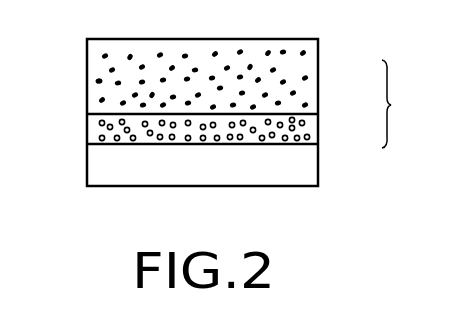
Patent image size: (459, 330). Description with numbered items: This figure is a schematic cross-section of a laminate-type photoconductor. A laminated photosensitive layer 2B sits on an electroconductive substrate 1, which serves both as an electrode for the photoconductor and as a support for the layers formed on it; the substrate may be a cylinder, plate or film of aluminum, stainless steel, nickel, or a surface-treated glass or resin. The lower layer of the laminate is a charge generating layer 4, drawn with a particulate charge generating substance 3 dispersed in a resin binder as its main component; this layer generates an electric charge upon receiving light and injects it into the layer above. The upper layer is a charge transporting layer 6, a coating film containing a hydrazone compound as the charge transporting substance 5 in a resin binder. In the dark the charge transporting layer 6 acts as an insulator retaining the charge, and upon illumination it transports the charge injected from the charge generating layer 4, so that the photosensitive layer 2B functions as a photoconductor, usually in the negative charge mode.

The electroconductive substrate 1 is at (318, 168).
The laminated photosensitive layer 2B is at (404, 104).
The charge generating substance 3 is at (99, 122).
The charge generating layer 4 is at (318, 130).
The charge transporting substance 5 is at (96, 81).
The charge transporting layer 6 is at (318, 92).